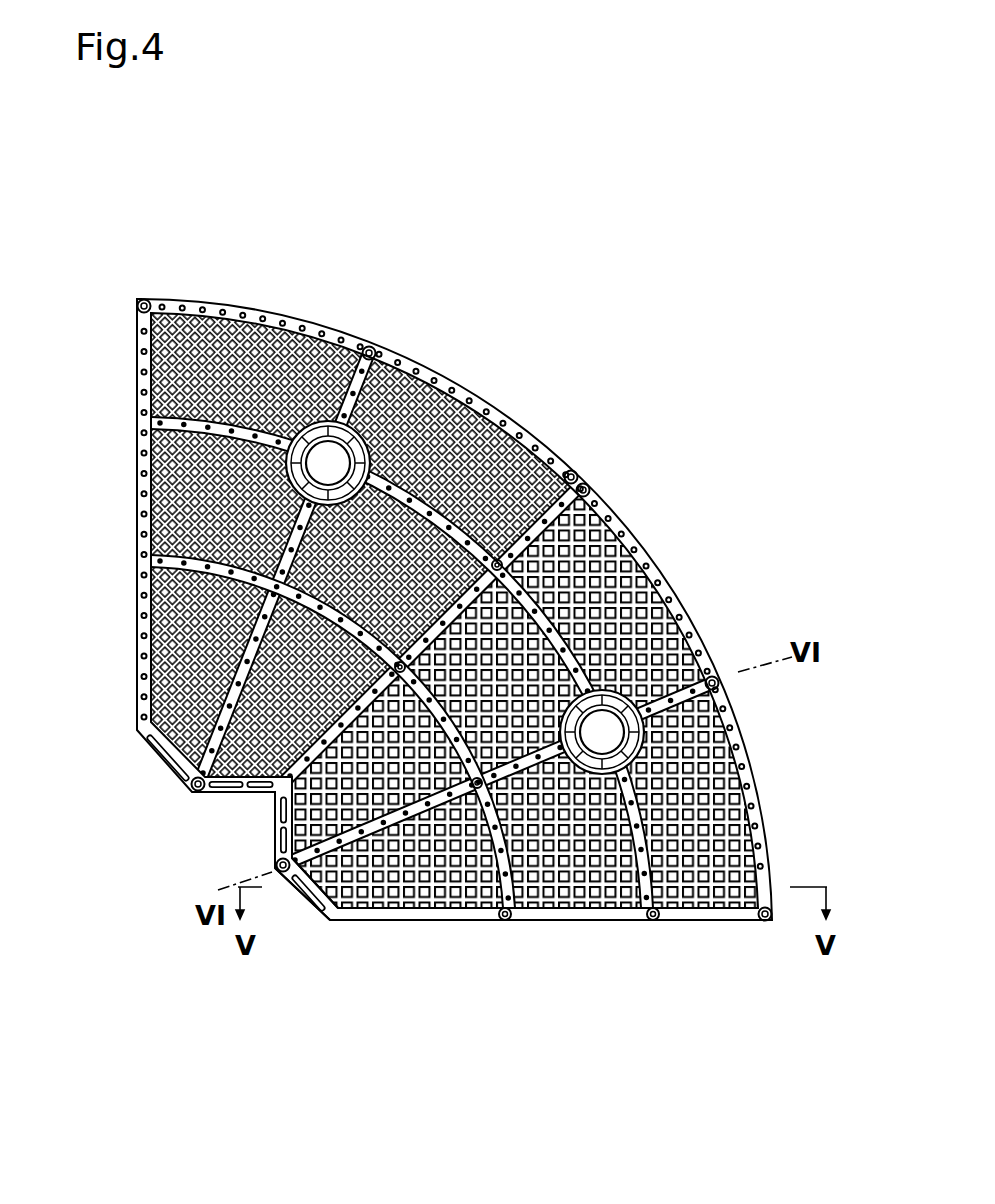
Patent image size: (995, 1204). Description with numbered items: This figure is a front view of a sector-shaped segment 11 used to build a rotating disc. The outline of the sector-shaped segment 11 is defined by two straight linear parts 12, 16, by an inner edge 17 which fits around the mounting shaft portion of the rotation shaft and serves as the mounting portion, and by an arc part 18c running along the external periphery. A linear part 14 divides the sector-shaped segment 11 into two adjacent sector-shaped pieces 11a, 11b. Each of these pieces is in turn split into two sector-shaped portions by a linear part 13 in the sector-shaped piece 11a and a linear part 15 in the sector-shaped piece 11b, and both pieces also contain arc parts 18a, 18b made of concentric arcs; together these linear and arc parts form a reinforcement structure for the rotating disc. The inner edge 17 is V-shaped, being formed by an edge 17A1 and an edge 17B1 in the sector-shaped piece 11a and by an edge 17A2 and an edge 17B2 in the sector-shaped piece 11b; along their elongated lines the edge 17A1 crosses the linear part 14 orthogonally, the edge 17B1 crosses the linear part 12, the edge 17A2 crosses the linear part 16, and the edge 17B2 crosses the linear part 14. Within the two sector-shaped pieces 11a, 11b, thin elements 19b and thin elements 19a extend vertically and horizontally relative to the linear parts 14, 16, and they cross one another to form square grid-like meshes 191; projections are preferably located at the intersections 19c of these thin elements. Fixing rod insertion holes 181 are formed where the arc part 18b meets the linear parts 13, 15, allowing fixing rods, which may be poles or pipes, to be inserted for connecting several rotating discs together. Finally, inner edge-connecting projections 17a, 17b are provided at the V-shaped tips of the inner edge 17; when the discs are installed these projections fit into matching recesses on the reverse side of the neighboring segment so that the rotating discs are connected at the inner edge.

The sector-shaped segment 11 is at (640, 478).
The sector-shaped piece 11a is at (463, 372).
The sector-shaped piece 11b is at (703, 600).
The linear part 12 is at (140, 378).
The linear part 13 is at (370, 350).
The linear part 14 is at (578, 483).
The linear part 15 is at (716, 680).
The linear part 16 is at (718, 922).
The inner edge 17 is at (185, 874).
The edge 17A1 is at (145, 745).
The edge 17A2 is at (272, 868).
The edge 17B1 is at (276, 845).
The edge 17B2 is at (336, 928).
The inner edge-connecting projection 17a is at (196, 790).
The inner edge-connecting projection 17b is at (312, 912).
The arc part 18a is at (492, 922).
The arc part 18b is at (655, 922).
The arc part 18c is at (762, 817).
The fixing rod insertion hole 181 is at (395, 378).
The thin element 19a is at (530, 472).
The thin element 19b is at (556, 480).
The intersection 19c is at (620, 922).
The square grid-like mesh 191 is at (208, 333).